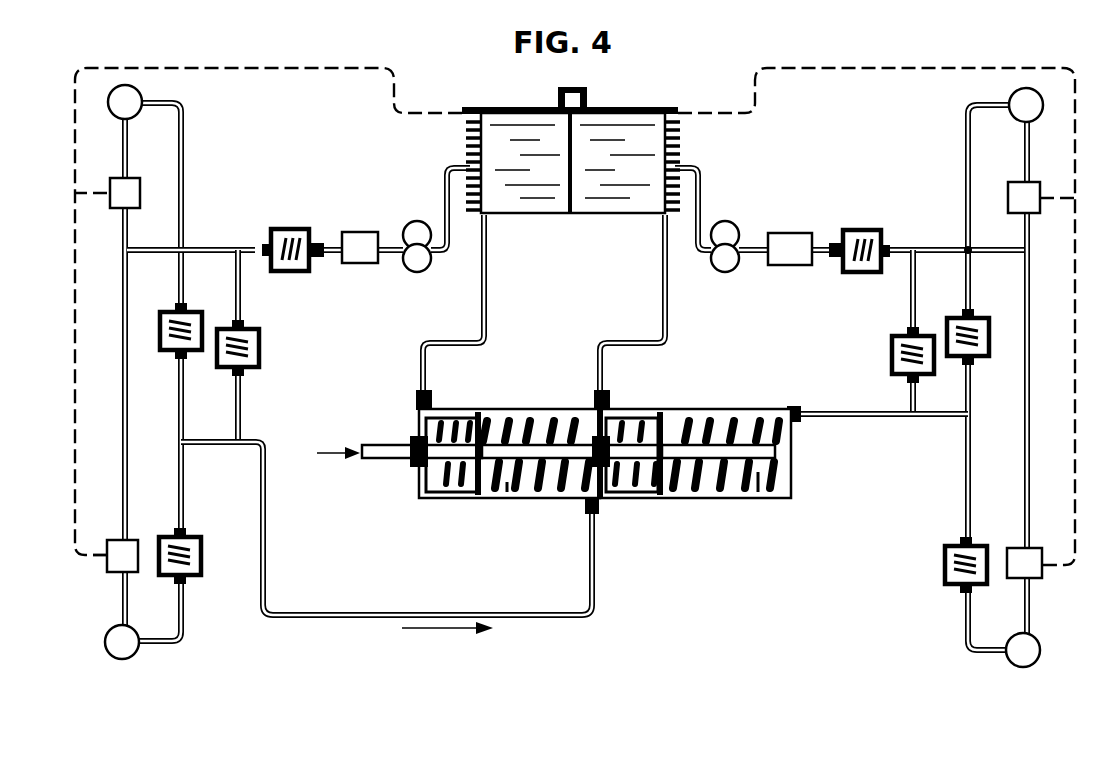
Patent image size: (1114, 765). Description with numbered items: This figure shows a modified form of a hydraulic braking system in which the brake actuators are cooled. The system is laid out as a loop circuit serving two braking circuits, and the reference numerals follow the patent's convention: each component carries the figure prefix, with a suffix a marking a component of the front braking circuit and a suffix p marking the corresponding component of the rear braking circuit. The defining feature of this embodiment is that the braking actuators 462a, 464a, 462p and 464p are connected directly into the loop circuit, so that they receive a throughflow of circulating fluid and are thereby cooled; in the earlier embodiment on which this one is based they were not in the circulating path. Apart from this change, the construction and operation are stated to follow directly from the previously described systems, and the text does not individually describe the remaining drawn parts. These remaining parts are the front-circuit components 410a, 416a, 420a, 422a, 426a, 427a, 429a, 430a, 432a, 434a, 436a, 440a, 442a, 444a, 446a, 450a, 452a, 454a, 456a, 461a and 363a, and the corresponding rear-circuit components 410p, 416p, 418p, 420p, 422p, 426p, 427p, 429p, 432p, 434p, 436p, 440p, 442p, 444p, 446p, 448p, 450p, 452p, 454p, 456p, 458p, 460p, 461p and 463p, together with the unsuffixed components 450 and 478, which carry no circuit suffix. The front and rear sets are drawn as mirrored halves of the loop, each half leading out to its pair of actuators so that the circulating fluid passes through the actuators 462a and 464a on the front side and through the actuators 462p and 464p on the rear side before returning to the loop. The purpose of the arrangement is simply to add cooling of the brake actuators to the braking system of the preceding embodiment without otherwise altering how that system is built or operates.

The valve block 363a is at (1025, 545).
The pump 410p is at (420, 232).
The pump 410a is at (725, 232).
The conduit 416p is at (390, 246).
The conduit 416a is at (755, 255).
The accumulator 418p is at (363, 240).
The conduit 420p is at (330, 242).
The conduit 420a is at (822, 242).
The relief valve 422p is at (291, 271).
The relief valve 422a is at (870, 230).
The cylinder housing 426p is at (535, 406).
The cylinder housing 426a is at (740, 406).
The outlet conduit 427p is at (585, 515).
The outlet conduit 427a is at (803, 410).
The inlet fitting 429p is at (416, 397).
The inlet fitting 429a is at (598, 392).
The output shaft 430a is at (790, 452).
The chamber 432p is at (525, 496).
The chamber 432a is at (737, 496).
The spring 434p is at (478, 496).
The spring 434a is at (686, 415).
The piston 436p is at (430, 496).
The piston 436a is at (612, 498).
The spring seat 440p is at (508, 493).
The spring seat 440a is at (758, 493).
The shaft coupling 442p is at (383, 460).
The shaft coupling 442a is at (636, 495).
The piston plate 444p is at (490, 393).
The piston plate 444a is at (622, 415).
The conduit 446p is at (148, 254).
The conduit 446a is at (990, 254).
The conduit 448p is at (127, 228).
The reservoir 450 is at (605, 132).
The conduit 450p is at (133, 392).
The conduit 450a is at (1030, 368).
The valve block 452p is at (130, 190).
The valve block 452a is at (1020, 192).
The valve block 454p is at (132, 548).
The relief valve 454a is at (995, 548).
The control line 456p is at (90, 205).
The control line 456a is at (1057, 208).
The control line 458p is at (82, 573).
The control unit enclosure 460p is at (380, 96).
The conduit 461p is at (127, 124).
The conduit 461a is at (1020, 134).
The braking actuator 462p is at (128, 100).
The braking actuator 462a is at (1026, 100).
The conduit 463p is at (123, 610).
The braking actuator 464p is at (112, 632).
The braking actuator 464a is at (1028, 655).
The conduit 478 is at (597, 405).